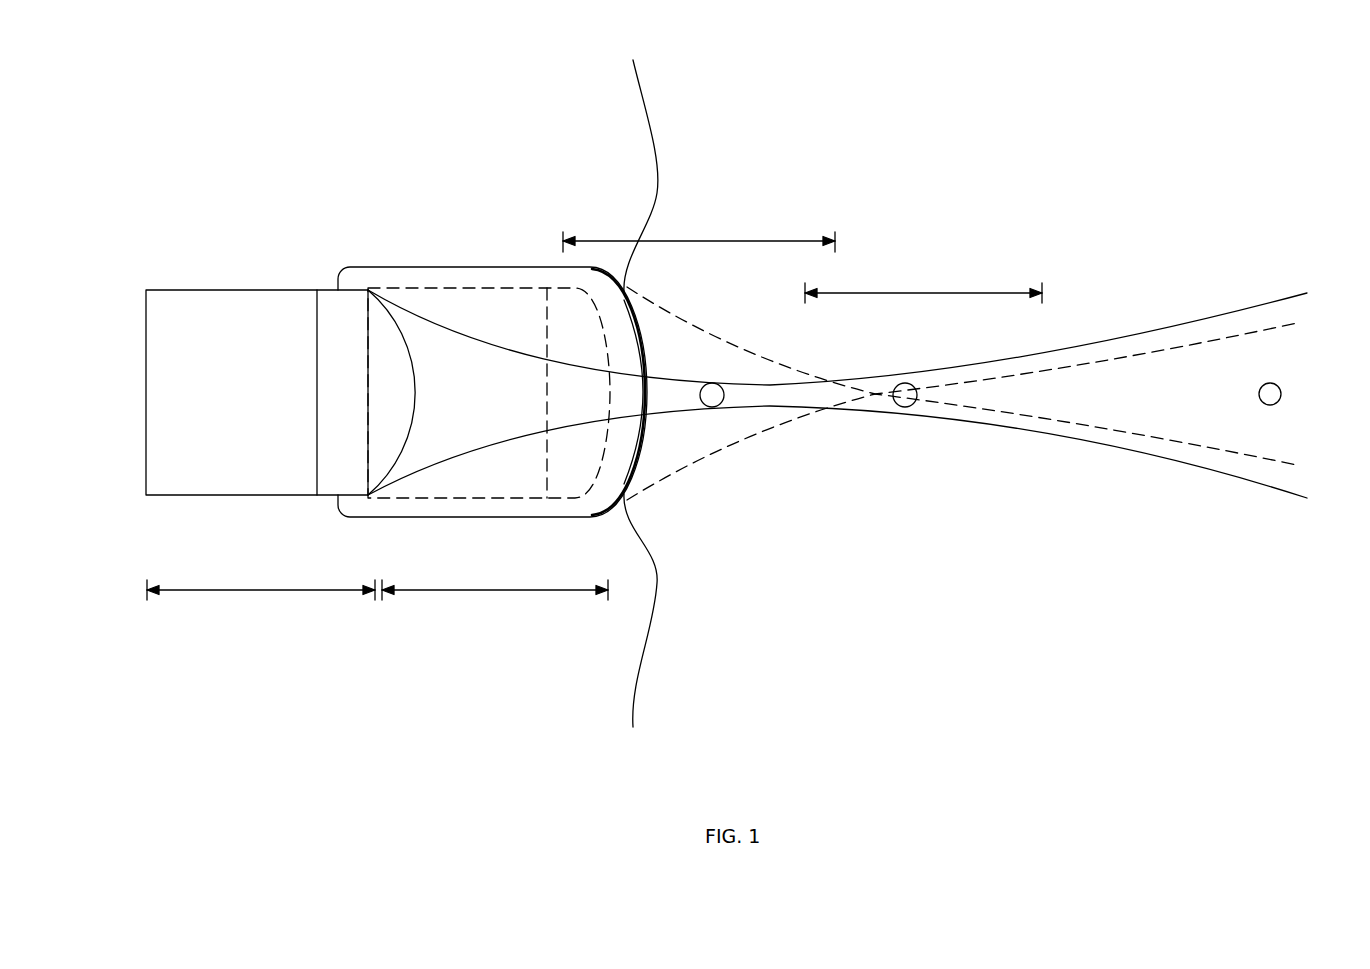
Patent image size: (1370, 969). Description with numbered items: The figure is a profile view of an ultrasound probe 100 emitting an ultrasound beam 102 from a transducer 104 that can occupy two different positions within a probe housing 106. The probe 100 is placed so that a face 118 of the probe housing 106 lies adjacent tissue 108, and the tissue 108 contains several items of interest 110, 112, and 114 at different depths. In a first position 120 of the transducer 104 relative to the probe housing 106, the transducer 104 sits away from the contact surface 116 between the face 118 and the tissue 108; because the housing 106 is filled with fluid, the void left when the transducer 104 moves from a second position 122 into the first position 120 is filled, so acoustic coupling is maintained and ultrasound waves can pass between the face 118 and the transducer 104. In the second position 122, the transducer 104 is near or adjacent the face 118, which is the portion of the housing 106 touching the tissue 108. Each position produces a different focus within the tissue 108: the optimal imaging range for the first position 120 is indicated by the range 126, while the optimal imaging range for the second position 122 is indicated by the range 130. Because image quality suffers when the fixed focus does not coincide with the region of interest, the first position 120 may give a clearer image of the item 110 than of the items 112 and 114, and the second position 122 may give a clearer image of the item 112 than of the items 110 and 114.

The ultrasound probe 100 is at (300, 93).
The ultrasound beam 102 is at (924, 497).
The transducer 104 is at (215, 290).
The probe housing 106 is at (490, 267).
The tissue 108 is at (640, 658).
The item of interest 110 is at (712, 393).
The item of interest 112 is at (905, 395).
The item of interest 114 is at (1272, 392).
The contact surface 116 is at (642, 435).
The face 118 is at (638, 462).
The first position 120 is at (254, 618).
The second position 122 is at (485, 618).
The optimal imaging range 126 is at (710, 241).
The optimal imaging range 130 is at (935, 293).